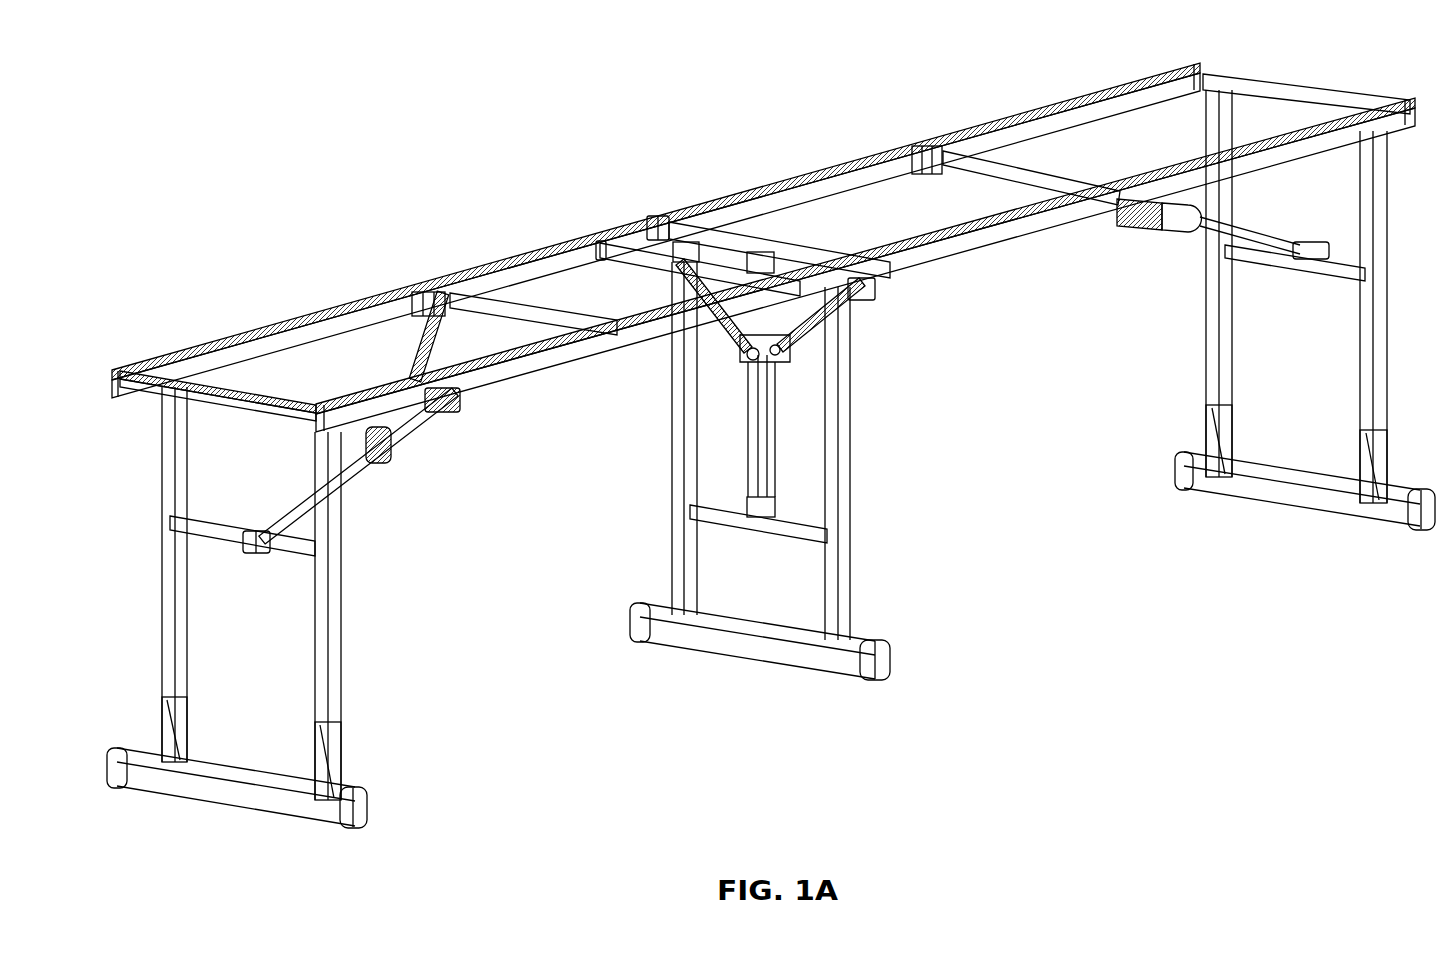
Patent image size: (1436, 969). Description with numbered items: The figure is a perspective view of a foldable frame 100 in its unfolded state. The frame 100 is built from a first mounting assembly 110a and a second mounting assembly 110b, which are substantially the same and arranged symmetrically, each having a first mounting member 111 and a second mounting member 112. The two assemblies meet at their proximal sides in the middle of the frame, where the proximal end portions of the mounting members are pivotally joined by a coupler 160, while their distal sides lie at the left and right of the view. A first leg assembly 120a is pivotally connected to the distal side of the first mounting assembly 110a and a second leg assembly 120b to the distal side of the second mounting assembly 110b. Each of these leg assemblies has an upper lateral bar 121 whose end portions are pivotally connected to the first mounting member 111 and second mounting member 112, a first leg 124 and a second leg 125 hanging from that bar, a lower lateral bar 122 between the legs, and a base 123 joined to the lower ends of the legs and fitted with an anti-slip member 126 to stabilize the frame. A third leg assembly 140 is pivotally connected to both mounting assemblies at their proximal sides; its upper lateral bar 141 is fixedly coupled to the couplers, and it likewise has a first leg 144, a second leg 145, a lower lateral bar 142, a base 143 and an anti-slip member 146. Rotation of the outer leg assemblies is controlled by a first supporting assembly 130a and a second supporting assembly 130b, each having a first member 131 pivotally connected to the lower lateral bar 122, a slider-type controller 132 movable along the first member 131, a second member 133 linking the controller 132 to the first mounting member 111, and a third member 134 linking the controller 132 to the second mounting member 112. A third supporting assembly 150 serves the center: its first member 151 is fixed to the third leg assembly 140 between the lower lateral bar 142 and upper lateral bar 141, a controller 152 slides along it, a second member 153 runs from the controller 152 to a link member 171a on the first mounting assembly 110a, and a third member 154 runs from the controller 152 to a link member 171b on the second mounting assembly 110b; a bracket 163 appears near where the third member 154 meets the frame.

The foldable frame 100 is at (330, 90).
The first mounting assembly 110a is at (466, 260).
The second mounting assembly 110b is at (1036, 102).
The first mounting member 111 is at (523, 263).
The second mounting member 112 is at (547, 363).
The first leg assembly 120a is at (148, 465).
The second leg assembly 120b is at (1170, 366).
The upper lateral bar 121 is at (250, 385).
The lower lateral bar 122 is at (196, 538).
The base 123 is at (243, 790).
The first leg 124 is at (170, 653).
The second leg 125 is at (328, 653).
The anti-slip member 126 is at (360, 810).
The first supporting assembly 130a is at (446, 462).
The second supporting assembly 130b is at (1155, 262).
The first member 131 is at (285, 500).
The controller 132 is at (402, 445).
The second member 133 is at (400, 345).
The third member 134 is at (458, 398).
The third leg assembly 140 is at (654, 561).
The upper lateral bar 141 is at (743, 247).
The lower lateral bar 142 is at (713, 520).
The base 143 is at (757, 640).
The first leg 144 is at (672, 487).
The second leg 145 is at (847, 553).
The anti-slip member 146 is at (878, 653).
The third supporting assembly 150 is at (737, 421).
The first member 151 is at (775, 450).
The controller 152 is at (770, 367).
The second member 153 is at (735, 344).
The third member 154 is at (810, 317).
The coupler 160 is at (655, 212).
The strut bracket 163 is at (870, 292).
The link member 171a is at (640, 258).
The link member 171b is at (810, 227).